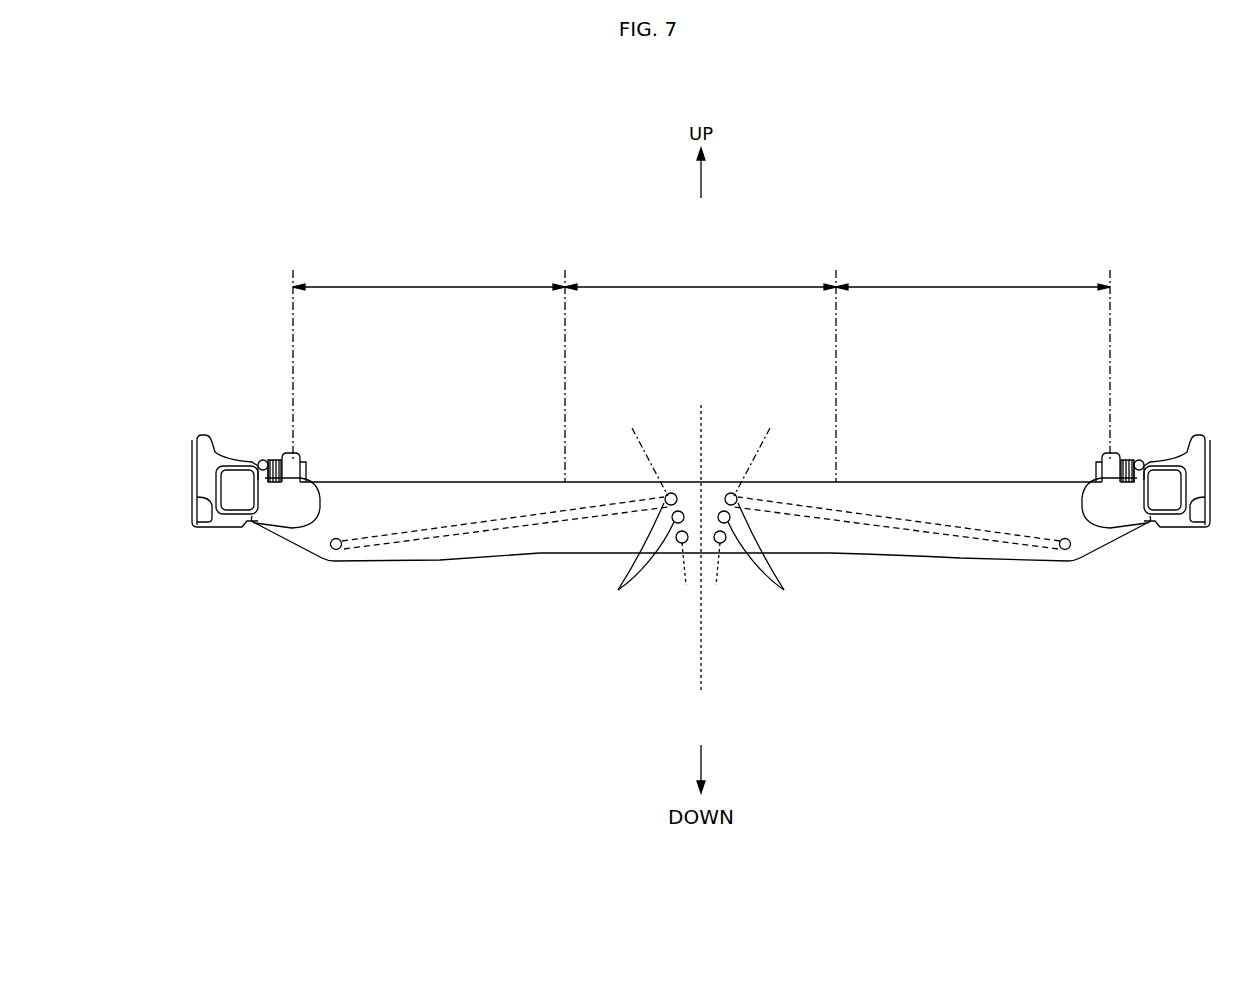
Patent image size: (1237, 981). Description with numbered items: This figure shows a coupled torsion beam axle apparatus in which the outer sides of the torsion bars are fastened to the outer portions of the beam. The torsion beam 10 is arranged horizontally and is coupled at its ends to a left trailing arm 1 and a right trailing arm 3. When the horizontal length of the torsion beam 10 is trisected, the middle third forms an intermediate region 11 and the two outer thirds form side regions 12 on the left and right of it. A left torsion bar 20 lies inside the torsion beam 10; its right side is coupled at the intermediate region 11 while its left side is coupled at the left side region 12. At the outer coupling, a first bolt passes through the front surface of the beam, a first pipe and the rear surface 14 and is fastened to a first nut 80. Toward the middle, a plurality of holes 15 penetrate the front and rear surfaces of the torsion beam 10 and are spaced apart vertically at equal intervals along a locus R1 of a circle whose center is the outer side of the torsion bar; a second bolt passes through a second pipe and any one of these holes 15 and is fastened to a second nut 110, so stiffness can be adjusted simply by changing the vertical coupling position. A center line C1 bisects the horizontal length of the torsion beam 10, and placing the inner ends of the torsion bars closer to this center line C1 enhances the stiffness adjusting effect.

The left trailing arm 1 is at (262, 462).
The right trailing arm 3 is at (1140, 462).
The torsion beam 10 is at (873, 558).
The intermediate region 11 is at (700, 370).
The side region 12 is at (701, 359).
The rear surface 14 is at (397, 495).
The hole 15 is at (618, 590).
The left torsion bar 20 is at (438, 535).
The first nut 80 is at (333, 552).
The second nut 110 is at (670, 492).
The locus of a circle R1 is at (664, 484).
The center line C1 is at (701, 547).